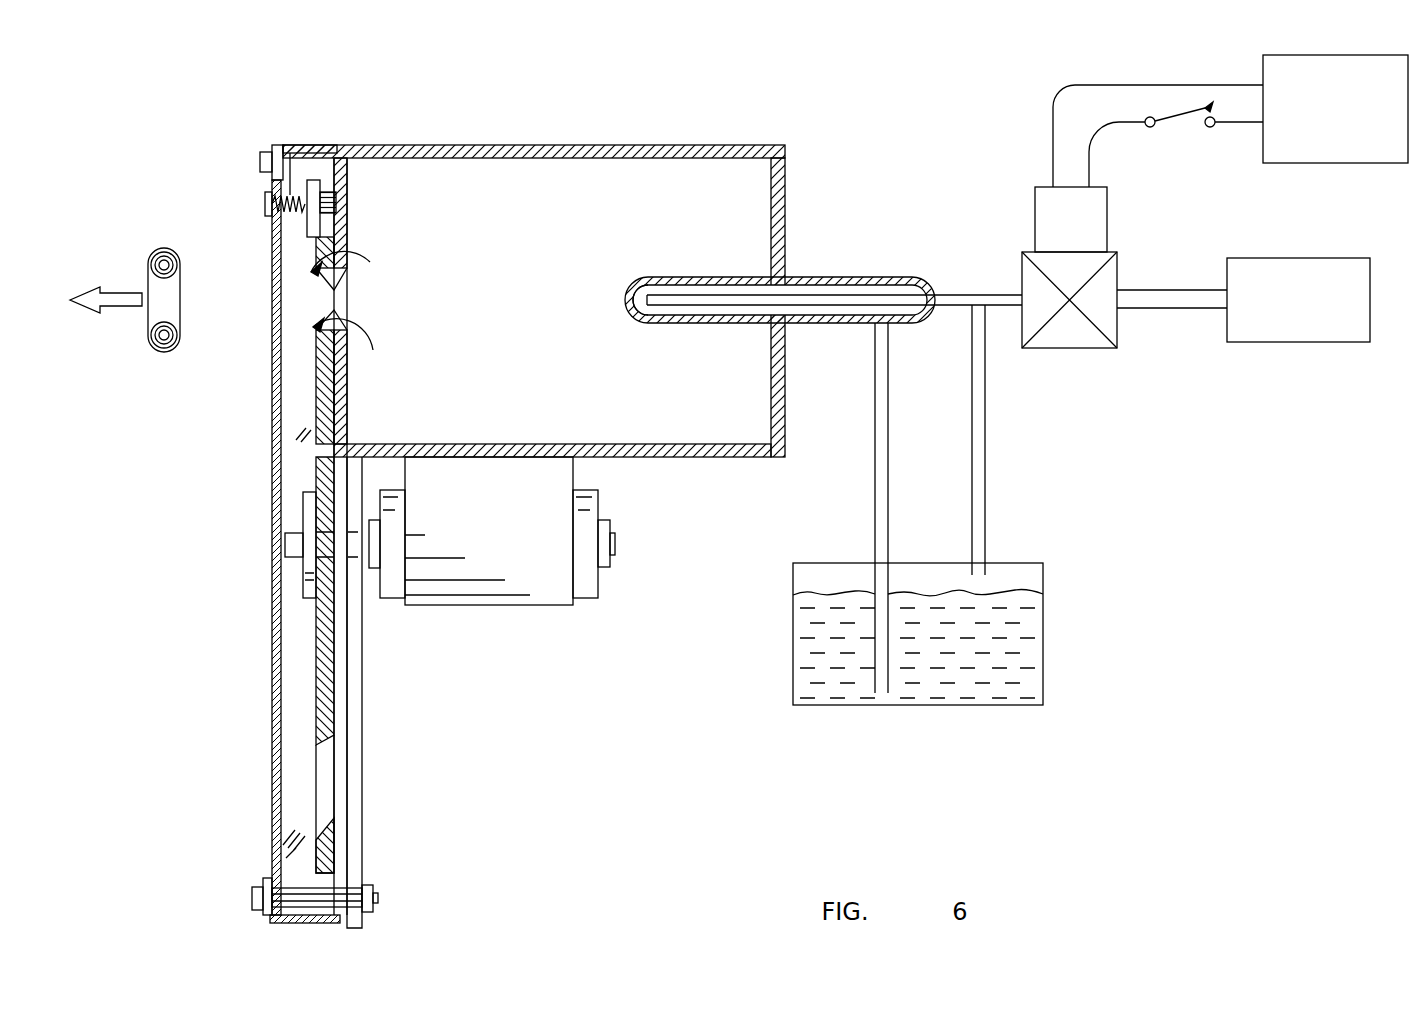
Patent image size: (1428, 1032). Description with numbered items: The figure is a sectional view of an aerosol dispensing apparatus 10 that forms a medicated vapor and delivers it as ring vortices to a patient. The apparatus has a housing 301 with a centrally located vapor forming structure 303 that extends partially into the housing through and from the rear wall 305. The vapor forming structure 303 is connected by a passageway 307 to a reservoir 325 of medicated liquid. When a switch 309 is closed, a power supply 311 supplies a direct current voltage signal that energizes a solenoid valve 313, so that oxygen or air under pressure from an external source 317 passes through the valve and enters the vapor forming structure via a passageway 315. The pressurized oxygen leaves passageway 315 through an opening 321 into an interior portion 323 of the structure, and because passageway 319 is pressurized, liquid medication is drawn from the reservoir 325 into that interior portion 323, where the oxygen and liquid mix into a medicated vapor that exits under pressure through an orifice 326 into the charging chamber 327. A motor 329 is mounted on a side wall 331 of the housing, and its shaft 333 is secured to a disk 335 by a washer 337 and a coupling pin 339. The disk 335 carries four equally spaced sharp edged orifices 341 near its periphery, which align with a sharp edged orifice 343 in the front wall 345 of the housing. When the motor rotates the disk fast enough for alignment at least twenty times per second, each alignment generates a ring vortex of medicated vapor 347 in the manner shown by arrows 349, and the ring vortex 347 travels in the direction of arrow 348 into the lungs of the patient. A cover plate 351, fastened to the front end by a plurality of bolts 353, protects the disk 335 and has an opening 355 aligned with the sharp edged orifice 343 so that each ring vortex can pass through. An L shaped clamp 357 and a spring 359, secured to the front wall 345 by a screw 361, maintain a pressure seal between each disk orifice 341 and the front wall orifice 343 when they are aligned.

The dispensing apparatus 10 is at (792, 105).
The housing 301 is at (573, 300).
The vapor forming structure 303 is at (723, 277).
The rear wall 305 is at (788, 188).
The passageway 307 is at (873, 506).
The switch 309 is at (1177, 113).
The power supply 311 is at (1378, 165).
The solenoid valve 313 is at (1065, 350).
The passageway 315 is at (955, 290).
The external source 317 is at (1262, 258).
The passageway 319 is at (987, 504).
The opening 321 is at (640, 280).
The interior portion 323 is at (715, 310).
The reservoir 325 is at (1044, 615).
The orifice 326 is at (625, 298).
The charging chamber 327 is at (503, 375).
The motor 329 is at (585, 600).
The side wall 331 is at (700, 459).
The shaft 333 is at (285, 547).
The disk 335 is at (316, 700).
The washer 337 is at (305, 576).
The coupling pin 339 is at (300, 522).
The sharp edged orifices 341 is at (322, 300).
The sharp edged orifice 343 is at (370, 262).
The front wall 345 is at (350, 207).
The ring vortex of medicated vapor 347 is at (165, 254).
The arrow 348 is at (107, 308).
The arrows 349 is at (372, 262).
The cover plate 351 is at (275, 843).
The bolts 353 is at (258, 163).
The opening 355 is at (275, 342).
The L shaped clamp 357 is at (320, 185).
The spring 359 is at (300, 195).
The screw 361 is at (268, 200).